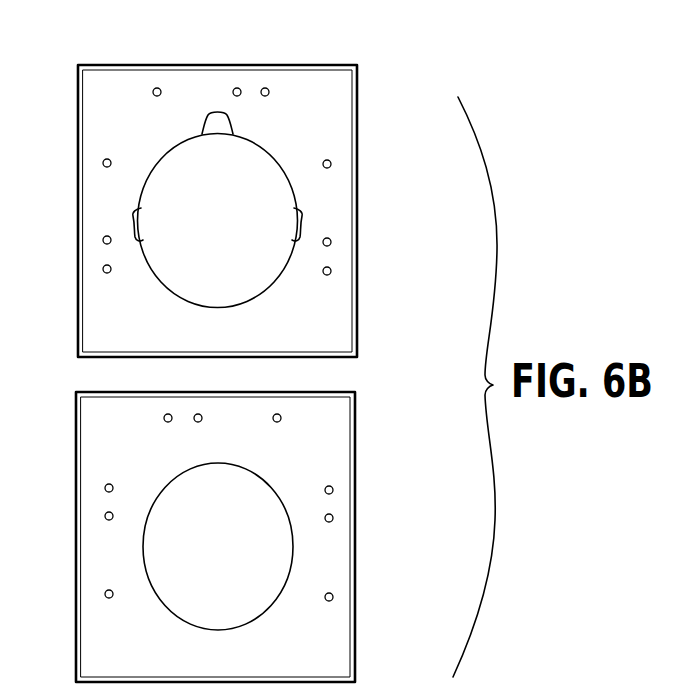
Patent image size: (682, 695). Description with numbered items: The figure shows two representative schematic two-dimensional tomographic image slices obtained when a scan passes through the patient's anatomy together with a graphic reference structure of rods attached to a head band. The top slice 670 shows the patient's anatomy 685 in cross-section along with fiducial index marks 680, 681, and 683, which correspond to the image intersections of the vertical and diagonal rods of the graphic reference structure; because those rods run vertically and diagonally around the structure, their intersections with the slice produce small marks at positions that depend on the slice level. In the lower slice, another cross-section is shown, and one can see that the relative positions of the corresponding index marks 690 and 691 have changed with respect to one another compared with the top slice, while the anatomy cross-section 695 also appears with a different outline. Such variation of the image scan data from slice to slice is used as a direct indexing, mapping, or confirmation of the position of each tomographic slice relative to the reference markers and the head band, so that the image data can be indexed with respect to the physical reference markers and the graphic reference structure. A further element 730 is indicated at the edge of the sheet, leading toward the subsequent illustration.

The top slice 670 is at (357, 124).
The fiducial index mark 680 is at (268, 88).
The fiducial index mark 681 is at (237, 88).
The fiducial index mark 683 is at (157, 88).
The patient's anatomy 685 is at (279, 278).
The index mark 690 is at (281, 419).
The index mark 691 is at (197, 422).
The oval aperture 695 is at (291, 573).
The following sheet element 730 is at (567, 694).